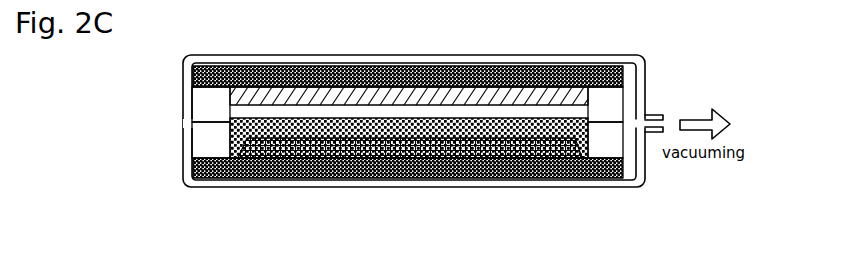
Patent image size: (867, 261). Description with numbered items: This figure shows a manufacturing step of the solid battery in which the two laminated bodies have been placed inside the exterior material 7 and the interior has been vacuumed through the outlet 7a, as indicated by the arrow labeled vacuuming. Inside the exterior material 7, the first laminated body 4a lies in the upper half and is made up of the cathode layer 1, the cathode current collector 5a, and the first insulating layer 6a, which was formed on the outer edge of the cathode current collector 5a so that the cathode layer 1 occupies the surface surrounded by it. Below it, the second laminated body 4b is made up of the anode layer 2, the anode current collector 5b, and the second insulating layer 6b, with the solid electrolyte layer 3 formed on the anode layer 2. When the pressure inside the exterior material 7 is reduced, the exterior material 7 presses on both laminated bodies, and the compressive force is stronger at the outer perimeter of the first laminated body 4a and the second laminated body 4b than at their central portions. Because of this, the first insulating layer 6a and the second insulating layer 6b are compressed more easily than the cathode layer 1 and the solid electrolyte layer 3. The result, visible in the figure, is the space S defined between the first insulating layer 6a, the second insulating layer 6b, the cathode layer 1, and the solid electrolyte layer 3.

The cathode layer 1 is at (243, 100).
The anode layer 2 is at (255, 158).
The solid electrolyte layer 3 is at (290, 140).
The first laminated body 4a is at (407, 61).
The second laminated body 4b is at (407, 182).
The cathode current collector 5a is at (280, 78).
The anode current collector 5b is at (198, 216).
The first insulating layer 6a is at (212, 95).
The second insulating layer 6b is at (213, 150).
The exterior material 7 is at (645, 68).
The outlet 7a is at (672, 112).
The space S is at (333, 118).